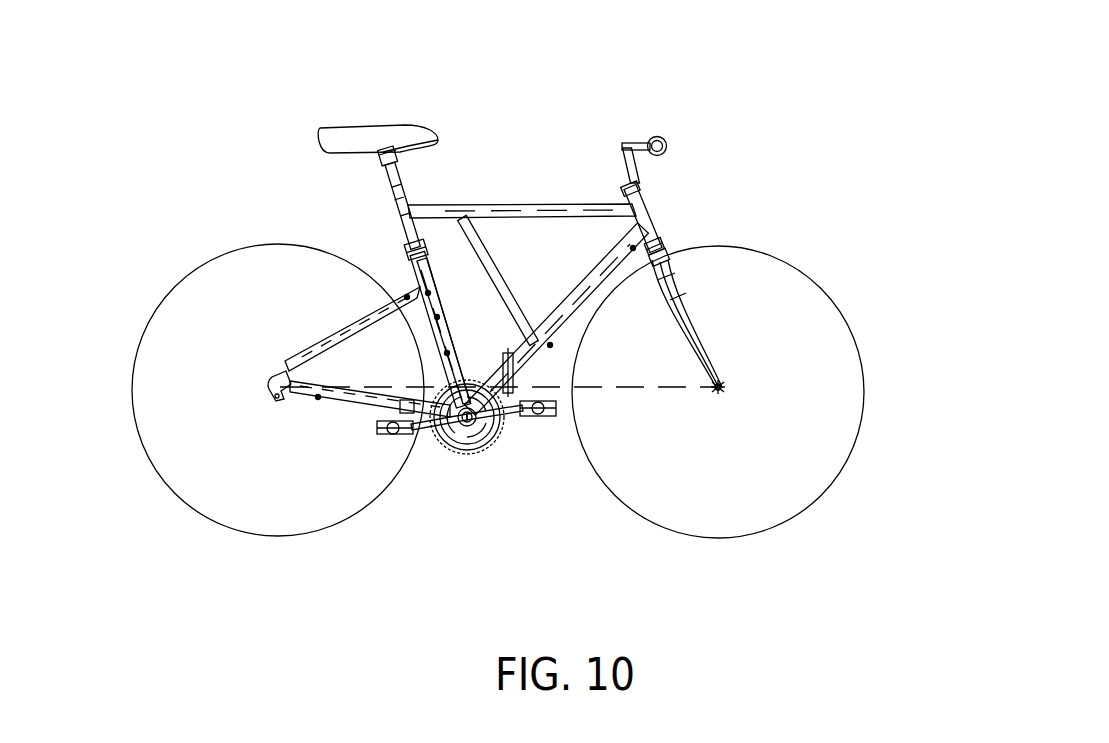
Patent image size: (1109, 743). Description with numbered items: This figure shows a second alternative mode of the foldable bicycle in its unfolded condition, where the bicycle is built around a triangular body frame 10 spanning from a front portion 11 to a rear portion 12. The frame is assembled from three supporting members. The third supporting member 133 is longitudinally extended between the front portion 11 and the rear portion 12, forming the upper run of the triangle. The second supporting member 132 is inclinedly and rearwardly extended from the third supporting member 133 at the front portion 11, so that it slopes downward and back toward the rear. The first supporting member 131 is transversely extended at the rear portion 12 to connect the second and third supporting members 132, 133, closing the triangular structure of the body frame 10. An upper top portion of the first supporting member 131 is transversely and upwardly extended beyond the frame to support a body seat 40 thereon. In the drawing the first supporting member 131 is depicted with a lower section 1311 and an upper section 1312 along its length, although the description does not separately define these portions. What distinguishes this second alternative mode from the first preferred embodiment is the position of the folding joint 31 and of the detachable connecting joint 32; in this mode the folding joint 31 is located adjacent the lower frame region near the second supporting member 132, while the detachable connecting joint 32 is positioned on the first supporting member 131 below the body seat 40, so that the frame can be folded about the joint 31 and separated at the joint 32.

The body frame 10 is at (700, 163).
The front portion 11 is at (843, 298).
The rear portion 12 is at (168, 232).
The first supporting member 131 is at (415, 272).
The lower tube section 1311 is at (430, 337).
The upper tube section (seat post) 1312 is at (405, 188).
The second supporting member 132 is at (563, 317).
The third supporting member 133 is at (565, 203).
The folding joint 31 is at (493, 350).
The detachable connecting joint 32 is at (397, 243).
The body seat 40 is at (367, 135).